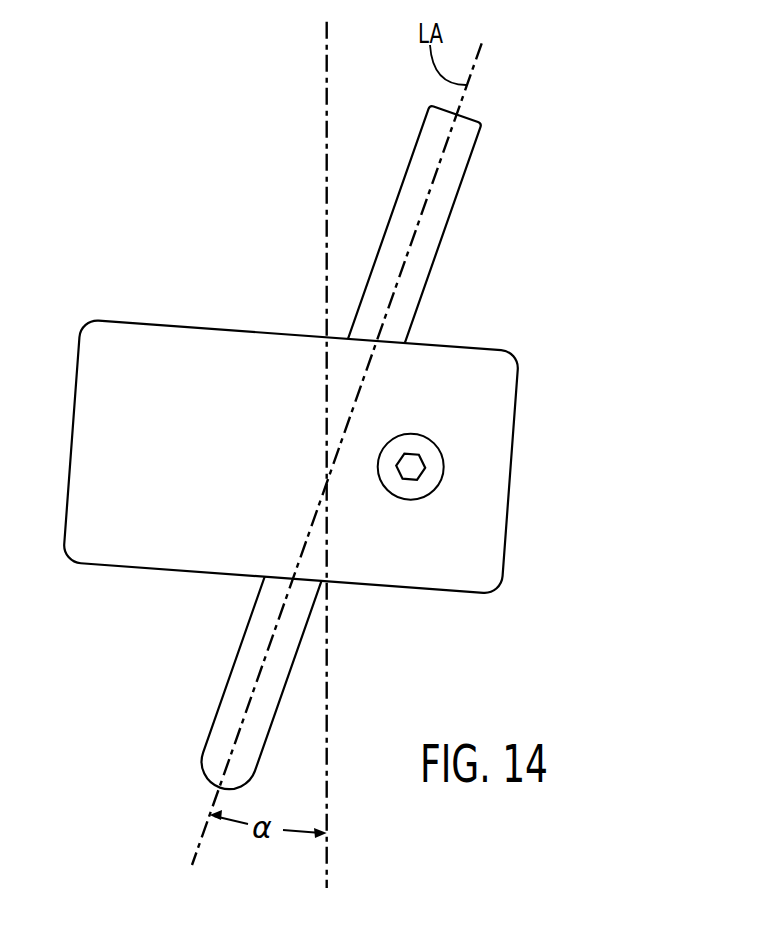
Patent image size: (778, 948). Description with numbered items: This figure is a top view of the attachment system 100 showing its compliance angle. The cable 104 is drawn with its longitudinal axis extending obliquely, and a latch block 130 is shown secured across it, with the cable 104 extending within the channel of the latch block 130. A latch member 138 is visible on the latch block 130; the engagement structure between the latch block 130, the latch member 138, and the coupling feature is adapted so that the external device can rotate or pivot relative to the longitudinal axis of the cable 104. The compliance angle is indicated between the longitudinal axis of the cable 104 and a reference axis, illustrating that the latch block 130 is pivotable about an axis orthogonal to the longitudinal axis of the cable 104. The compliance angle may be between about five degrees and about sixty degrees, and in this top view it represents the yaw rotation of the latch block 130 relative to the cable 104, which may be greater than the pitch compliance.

The attachment system 100 is at (366, 451).
The cable 104 is at (457, 158).
The latch block 130 is at (177, 340).
The latch member 138 is at (428, 482).